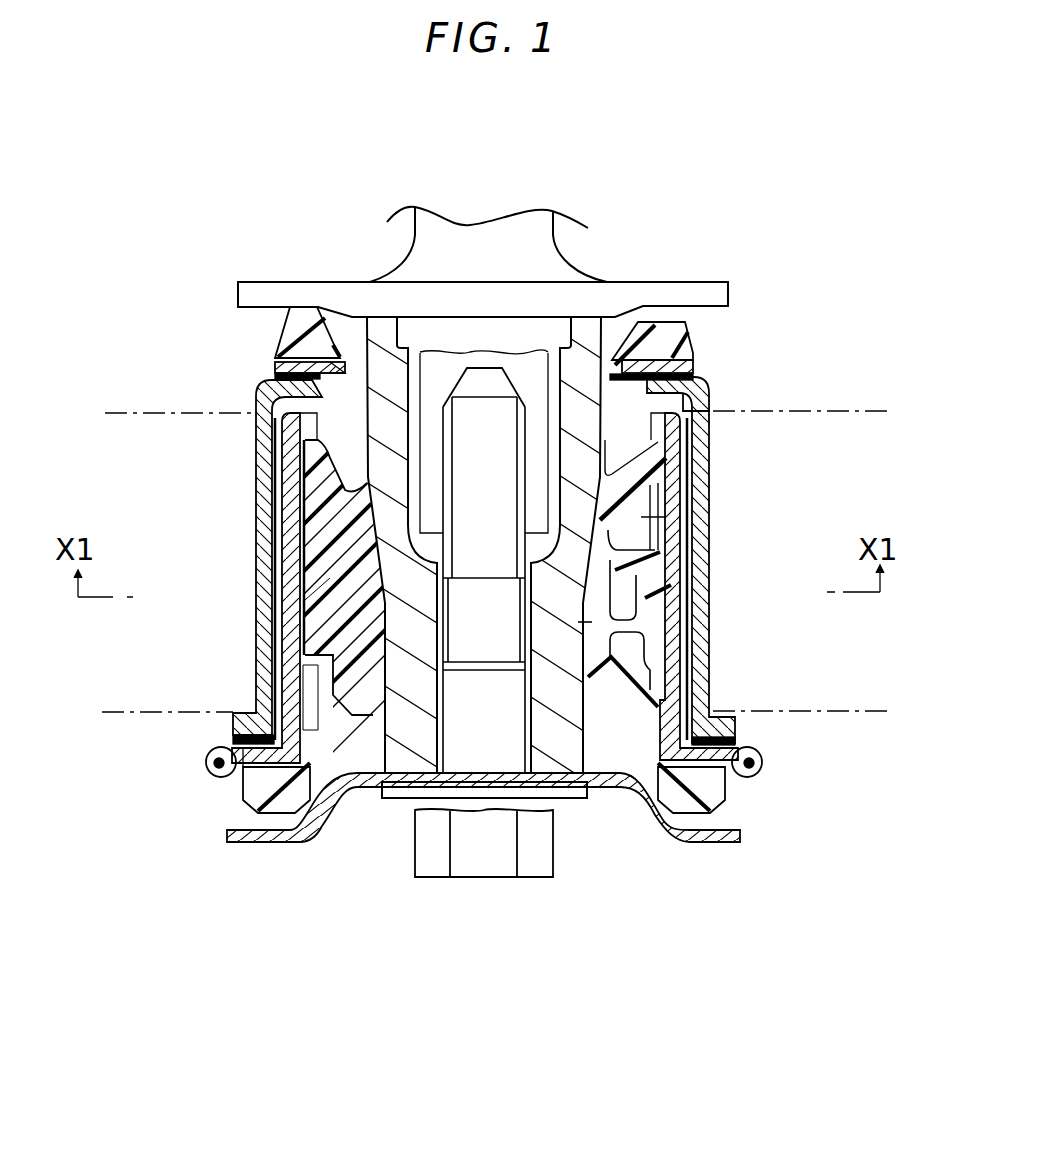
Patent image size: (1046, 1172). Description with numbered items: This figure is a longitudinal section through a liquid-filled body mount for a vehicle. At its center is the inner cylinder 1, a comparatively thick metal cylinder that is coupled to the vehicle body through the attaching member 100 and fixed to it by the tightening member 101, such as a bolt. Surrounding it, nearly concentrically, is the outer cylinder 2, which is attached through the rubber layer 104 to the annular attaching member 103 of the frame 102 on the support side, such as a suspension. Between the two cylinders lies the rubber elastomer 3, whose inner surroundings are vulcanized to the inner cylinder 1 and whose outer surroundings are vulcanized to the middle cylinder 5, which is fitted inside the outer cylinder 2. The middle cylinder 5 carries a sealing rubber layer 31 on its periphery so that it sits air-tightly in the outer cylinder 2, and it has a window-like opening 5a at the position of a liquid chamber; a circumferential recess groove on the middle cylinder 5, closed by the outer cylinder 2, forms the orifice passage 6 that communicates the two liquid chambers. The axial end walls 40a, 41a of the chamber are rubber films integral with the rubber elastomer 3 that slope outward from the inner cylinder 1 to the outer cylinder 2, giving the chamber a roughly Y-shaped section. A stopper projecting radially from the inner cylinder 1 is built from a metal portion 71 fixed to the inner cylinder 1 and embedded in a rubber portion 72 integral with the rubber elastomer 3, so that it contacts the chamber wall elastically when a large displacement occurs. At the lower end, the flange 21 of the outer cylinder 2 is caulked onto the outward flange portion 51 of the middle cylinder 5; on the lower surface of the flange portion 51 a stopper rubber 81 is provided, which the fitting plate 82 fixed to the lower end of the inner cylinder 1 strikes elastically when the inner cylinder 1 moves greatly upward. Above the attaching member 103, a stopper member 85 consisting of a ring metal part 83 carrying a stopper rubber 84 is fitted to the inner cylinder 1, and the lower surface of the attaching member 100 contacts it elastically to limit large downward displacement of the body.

The inner cylinder 1 is at (553, 740).
The outer cylinder 2 is at (643, 515).
The rubber elastomer 3 is at (363, 673).
The middle cylinder 5 is at (298, 577).
The window-like opening 5a is at (690, 670).
The orifice passage 6 is at (282, 678).
The flange 21 is at (208, 769).
The rubber layer 31 is at (262, 637).
The end wall 40a is at (678, 413).
The end wall 41a is at (630, 690).
The flange portion 51 is at (241, 772).
The metal portion 71 is at (630, 592).
The rubber portion 72 is at (667, 610).
The stopper rubber 81 is at (268, 838).
The fitting plate 82 is at (305, 838).
The ring metal part 83 is at (683, 358).
The stopper rubber 84 is at (663, 330).
The stopper member 85 is at (702, 349).
The attaching member 100 is at (526, 242).
The tightening member 101 is at (487, 747).
The frame 102 is at (112, 712).
The attaching member 103 is at (270, 443).
The rubber layer 104 is at (276, 488).